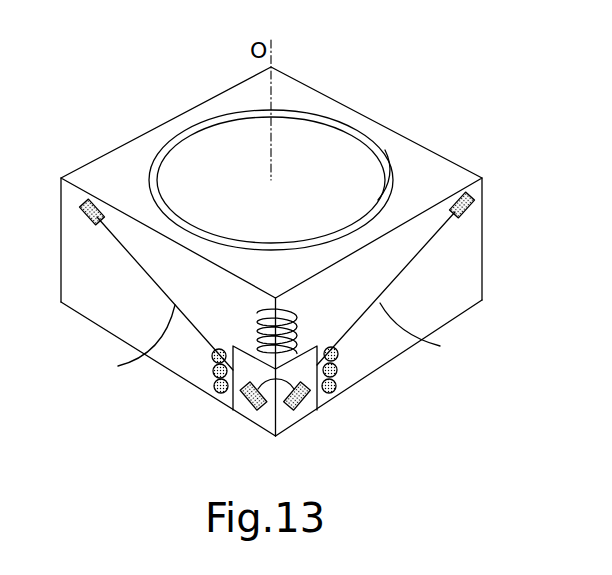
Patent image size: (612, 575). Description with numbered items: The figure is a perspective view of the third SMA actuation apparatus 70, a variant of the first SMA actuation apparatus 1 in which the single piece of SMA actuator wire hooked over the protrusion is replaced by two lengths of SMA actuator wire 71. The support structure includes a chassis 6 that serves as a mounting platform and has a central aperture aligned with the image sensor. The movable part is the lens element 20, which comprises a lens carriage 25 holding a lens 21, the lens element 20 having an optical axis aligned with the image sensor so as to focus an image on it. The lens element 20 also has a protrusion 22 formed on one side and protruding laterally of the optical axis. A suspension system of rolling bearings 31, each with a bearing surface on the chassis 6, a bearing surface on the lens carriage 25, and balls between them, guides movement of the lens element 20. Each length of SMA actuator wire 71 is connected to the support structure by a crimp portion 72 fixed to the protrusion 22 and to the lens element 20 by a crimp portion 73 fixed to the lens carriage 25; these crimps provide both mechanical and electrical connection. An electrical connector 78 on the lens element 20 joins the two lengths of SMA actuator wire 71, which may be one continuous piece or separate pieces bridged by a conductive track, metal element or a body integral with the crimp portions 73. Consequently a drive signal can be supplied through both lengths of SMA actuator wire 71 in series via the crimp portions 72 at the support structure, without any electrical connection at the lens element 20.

The SMA actuation apparatus 1 is at (103, 177).
The chassis 6 is at (170, 128).
The lens element 20 is at (360, 133).
The lens 21 is at (318, 137).
The protrusion 22 is at (241, 360).
The lens carriage 25 is at (378, 152).
The rolling bearings 31 is at (213, 383).
The third SMA actuation apparatus 70 is at (172, 58).
The lengths of SMA actuator wire 71 is at (280, 342).
The crimp portion 72 is at (254, 406).
The crimp portion 73 is at (85, 214).
The electrical connector 78 is at (283, 390).